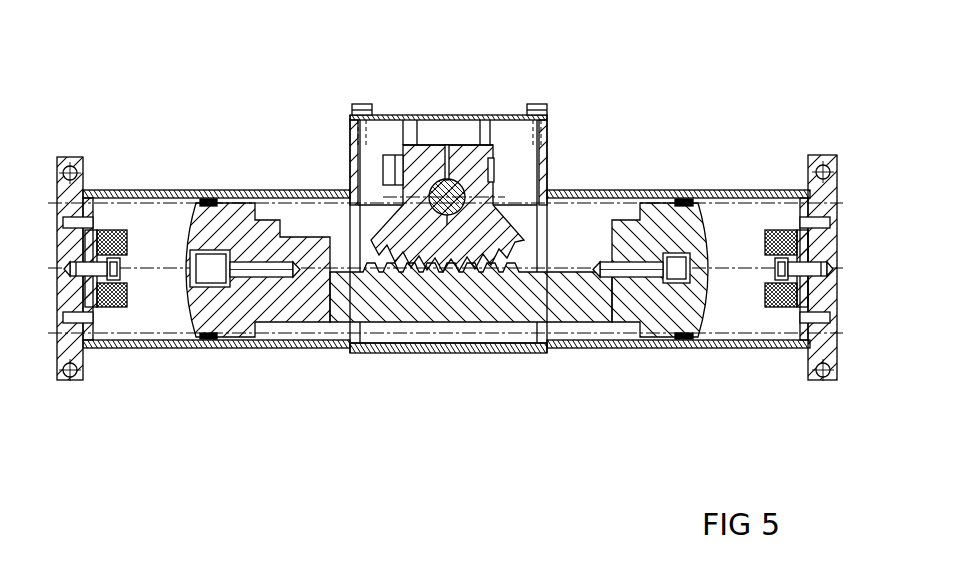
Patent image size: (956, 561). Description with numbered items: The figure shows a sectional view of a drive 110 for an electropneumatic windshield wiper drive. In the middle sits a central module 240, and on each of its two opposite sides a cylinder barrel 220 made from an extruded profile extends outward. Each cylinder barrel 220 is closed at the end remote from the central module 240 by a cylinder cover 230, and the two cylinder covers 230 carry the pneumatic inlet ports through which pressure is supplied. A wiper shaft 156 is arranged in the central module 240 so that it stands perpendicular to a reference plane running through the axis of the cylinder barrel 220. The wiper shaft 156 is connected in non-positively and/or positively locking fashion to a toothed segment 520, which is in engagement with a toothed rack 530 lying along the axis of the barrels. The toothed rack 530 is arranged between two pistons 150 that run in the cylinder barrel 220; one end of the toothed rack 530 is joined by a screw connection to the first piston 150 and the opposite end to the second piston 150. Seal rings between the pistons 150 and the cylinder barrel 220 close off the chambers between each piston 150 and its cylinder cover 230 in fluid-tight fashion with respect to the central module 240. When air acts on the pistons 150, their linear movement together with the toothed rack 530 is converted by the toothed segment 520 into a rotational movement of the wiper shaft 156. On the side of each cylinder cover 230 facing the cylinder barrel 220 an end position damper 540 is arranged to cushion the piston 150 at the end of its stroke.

The drive 110 is at (445, 237).
The piston 150 is at (690, 208).
The wiper shaft 156 is at (412, 177).
The cylinder barrel 220 is at (241, 186).
The cylinder cover 230 is at (802, 357).
The central module 240 is at (367, 356).
The toothed segment 520 is at (478, 200).
The toothed rack 530 is at (543, 257).
The end position damper 540 is at (760, 313).